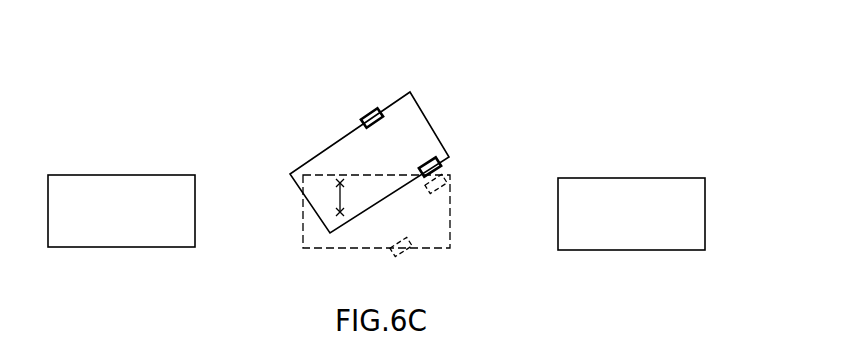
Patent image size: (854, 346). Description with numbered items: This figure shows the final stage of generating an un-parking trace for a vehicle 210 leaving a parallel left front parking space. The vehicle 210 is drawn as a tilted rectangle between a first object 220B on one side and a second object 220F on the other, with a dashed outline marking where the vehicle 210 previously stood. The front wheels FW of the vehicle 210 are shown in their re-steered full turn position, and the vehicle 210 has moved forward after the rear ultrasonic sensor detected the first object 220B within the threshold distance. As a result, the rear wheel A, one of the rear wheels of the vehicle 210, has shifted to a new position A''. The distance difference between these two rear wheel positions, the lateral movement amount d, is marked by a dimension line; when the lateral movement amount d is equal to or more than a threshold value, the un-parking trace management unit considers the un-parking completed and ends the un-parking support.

The first object 220B is at (79, 183).
The front boundary marker 220F is at (661, 185).
The vehicle 210 is at (335, 152).
The front wheel fw is at (374, 108).
The lateral movement amount d is at (348, 197).
The changed rear wheel position A'' is at (354, 161).
The rear wheel A is at (356, 249).